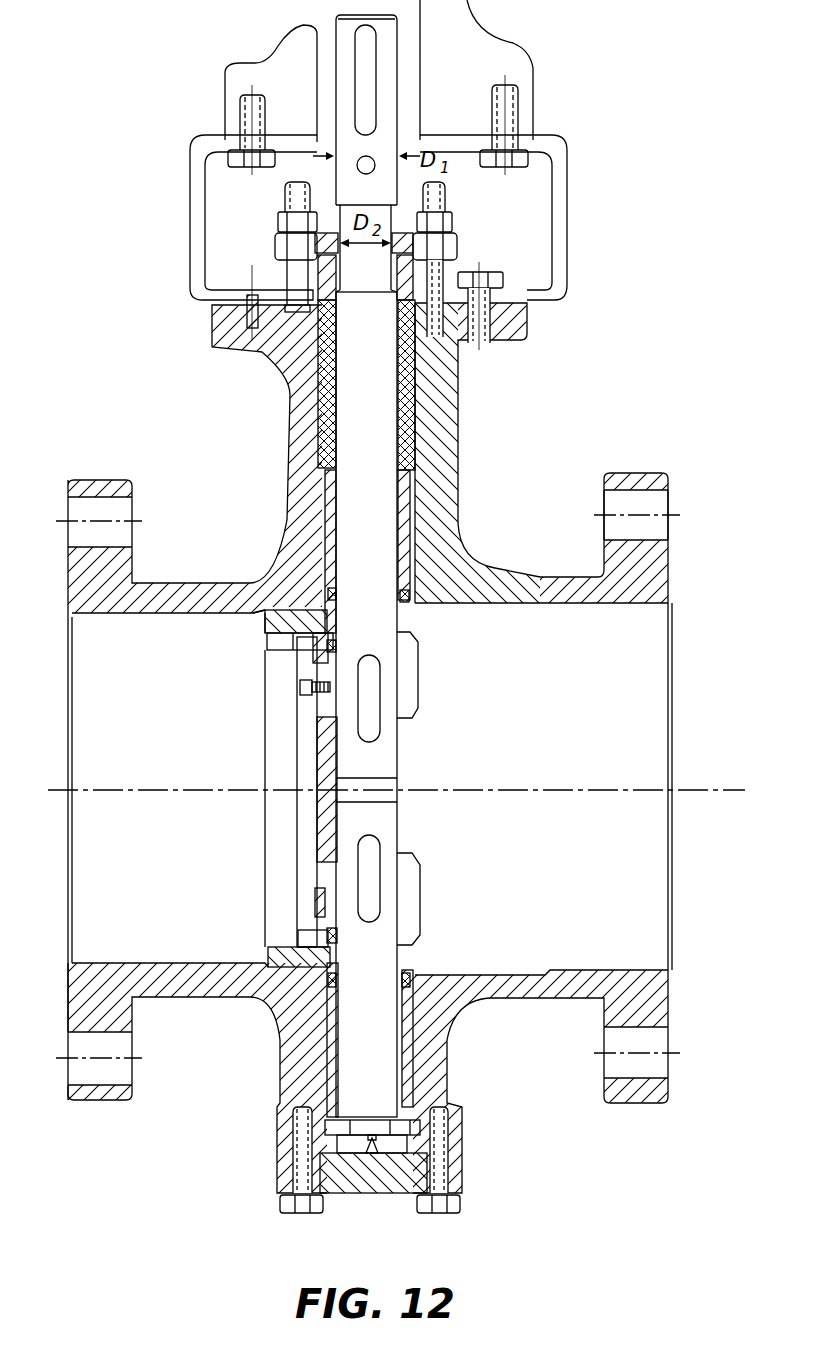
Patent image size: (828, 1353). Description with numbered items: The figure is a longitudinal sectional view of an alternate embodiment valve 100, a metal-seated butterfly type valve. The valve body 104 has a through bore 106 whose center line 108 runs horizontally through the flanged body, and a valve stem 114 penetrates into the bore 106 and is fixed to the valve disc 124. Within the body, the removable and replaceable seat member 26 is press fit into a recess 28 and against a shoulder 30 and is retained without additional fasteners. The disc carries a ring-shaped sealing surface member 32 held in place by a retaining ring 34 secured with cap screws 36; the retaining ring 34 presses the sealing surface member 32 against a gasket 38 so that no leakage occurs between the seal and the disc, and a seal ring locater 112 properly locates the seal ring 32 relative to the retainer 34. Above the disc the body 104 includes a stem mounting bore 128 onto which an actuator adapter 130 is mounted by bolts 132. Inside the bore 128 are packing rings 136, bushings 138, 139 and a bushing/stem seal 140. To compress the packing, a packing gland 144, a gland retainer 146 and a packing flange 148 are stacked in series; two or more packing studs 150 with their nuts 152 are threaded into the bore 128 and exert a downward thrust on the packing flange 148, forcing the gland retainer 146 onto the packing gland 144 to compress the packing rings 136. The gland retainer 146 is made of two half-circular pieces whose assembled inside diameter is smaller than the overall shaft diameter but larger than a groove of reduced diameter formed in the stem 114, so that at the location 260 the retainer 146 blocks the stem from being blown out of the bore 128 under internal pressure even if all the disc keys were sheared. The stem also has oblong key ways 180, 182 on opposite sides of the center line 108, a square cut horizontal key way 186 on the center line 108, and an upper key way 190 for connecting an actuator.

The valve 100 is at (565, 133).
The valve body 104 is at (543, 575).
The through bore 106 is at (648, 604).
The center line 108 is at (690, 783).
The seal ring locater 112 is at (322, 902).
The valve stem 114 is at (350, 1058).
The valve disc 124 is at (417, 678).
The stem mounting bore 128 is at (452, 440).
The actuator adapter 130 is at (570, 258).
The bolts 132 is at (503, 283).
The packing rings 136 is at (292, 385).
The bushing 138 is at (330, 488).
The bushing 139 is at (327, 422).
The bushing/stem seal 140 is at (413, 595).
The packing gland 144 is at (418, 255).
The gland retainer 146 is at (467, 350).
The packing flange 148 is at (455, 248).
The packing studs 150 is at (447, 193).
The nuts 152 is at (452, 222).
The oblong key way 180 is at (375, 722).
The oblong key way 182 is at (375, 857).
The horizontal key way 186 is at (400, 783).
The upper key way 190 is at (360, 88).
The location 260 is at (362, 287).
The seat member 26 is at (268, 636).
The recess 28 is at (298, 617).
The shoulder 30 is at (290, 612).
The sealing surface member 32 is at (325, 928).
The retaining ring 34 is at (303, 657).
The cap screws 36 is at (303, 687).
The gasket 38 is at (300, 1005).